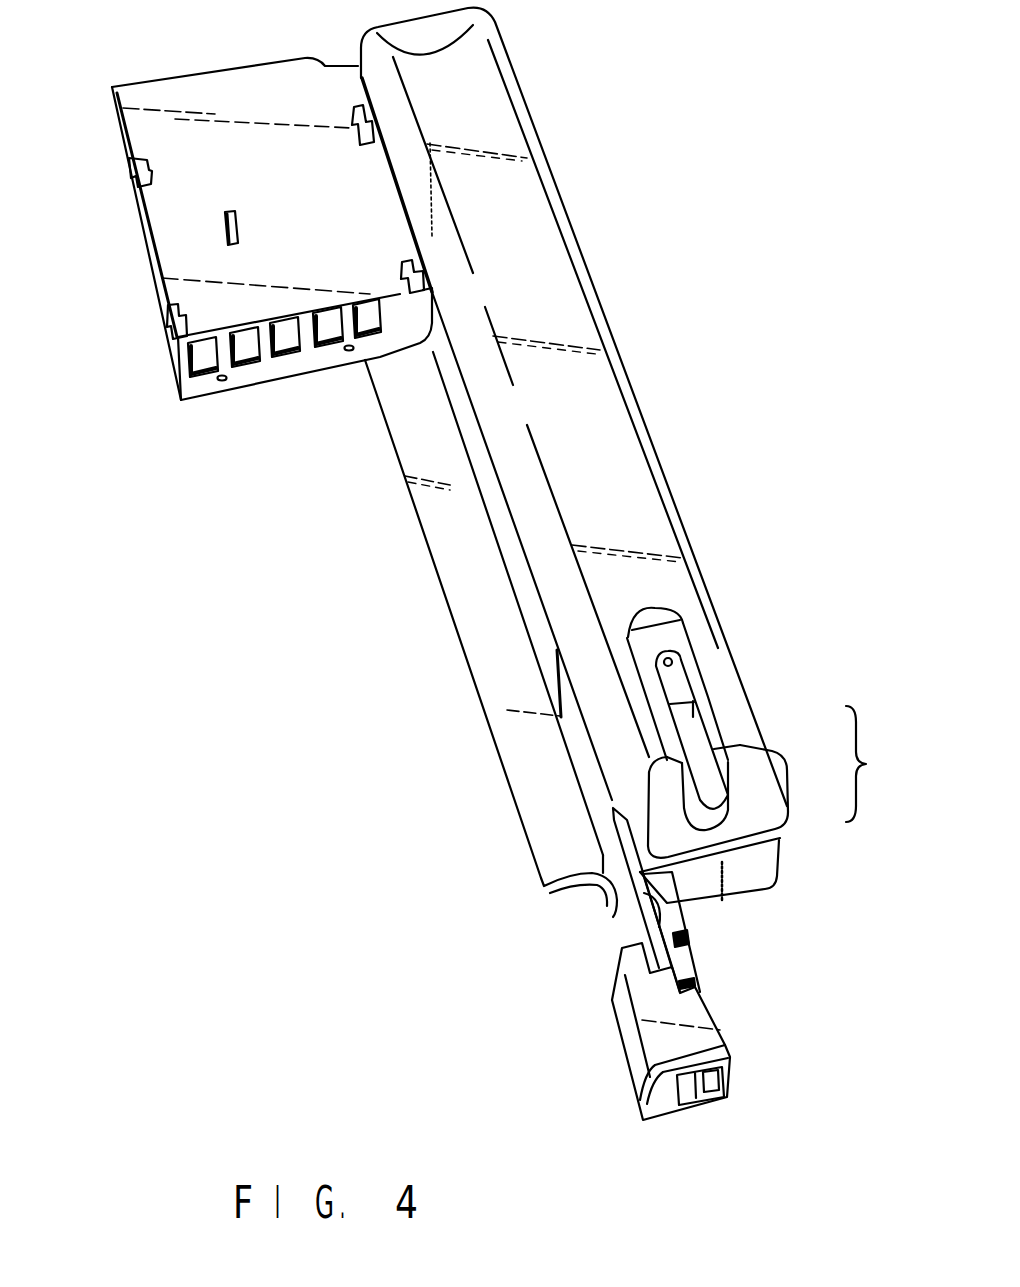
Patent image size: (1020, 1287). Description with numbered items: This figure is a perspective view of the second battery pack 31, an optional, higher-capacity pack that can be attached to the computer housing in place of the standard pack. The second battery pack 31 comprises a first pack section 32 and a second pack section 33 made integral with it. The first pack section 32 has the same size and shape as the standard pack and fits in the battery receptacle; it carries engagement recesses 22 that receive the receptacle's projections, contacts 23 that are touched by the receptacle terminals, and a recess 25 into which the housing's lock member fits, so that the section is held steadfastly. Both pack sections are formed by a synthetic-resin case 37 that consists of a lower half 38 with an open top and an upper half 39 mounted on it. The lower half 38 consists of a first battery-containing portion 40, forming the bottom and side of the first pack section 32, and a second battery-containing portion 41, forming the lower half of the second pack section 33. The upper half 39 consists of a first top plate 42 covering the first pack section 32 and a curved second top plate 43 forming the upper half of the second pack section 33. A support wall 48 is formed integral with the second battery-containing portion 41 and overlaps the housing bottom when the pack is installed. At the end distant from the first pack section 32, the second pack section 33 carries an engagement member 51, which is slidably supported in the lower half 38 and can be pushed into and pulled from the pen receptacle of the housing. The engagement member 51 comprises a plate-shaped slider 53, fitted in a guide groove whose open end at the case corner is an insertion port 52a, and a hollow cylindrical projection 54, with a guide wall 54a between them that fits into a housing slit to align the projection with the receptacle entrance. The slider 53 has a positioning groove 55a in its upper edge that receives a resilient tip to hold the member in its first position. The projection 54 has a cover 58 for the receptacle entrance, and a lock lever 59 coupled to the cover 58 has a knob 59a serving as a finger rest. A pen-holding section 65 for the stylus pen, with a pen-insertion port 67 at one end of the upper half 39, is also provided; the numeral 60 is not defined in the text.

The second battery pack 31 is at (543, 112).
The first pack section 32 is at (221, 88).
The recess 25 is at (115, 150).
The engagement recesses 22 is at (166, 308).
The contacts 23 is at (367, 340).
The first battery-containing portion 40 is at (172, 355).
The first top plate 42 is at (235, 287).
The second pack section 33 is at (641, 410).
The second top plate 43 is at (560, 306).
The support wall 48 is at (488, 683).
The tongue 60 is at (592, 886).
The pen-holding section 65 is at (690, 733).
The pen-insertion port 67 is at (695, 797).
The case 37 is at (766, 804).
The upper half 39 is at (752, 734).
The lower half 38 is at (775, 860).
The second battery-containing portion 41 is at (772, 877).
The slider 53 is at (730, 882).
The engagement member 51 is at (708, 967).
The insertion port 52a is at (657, 916).
The positioning groove 55a is at (643, 933).
The projection 54 is at (647, 1033).
The guide wall 54a is at (690, 987).
The cover 58 is at (663, 1107).
The lock lever 59 is at (724, 1072).
The knob 59a is at (705, 1088).